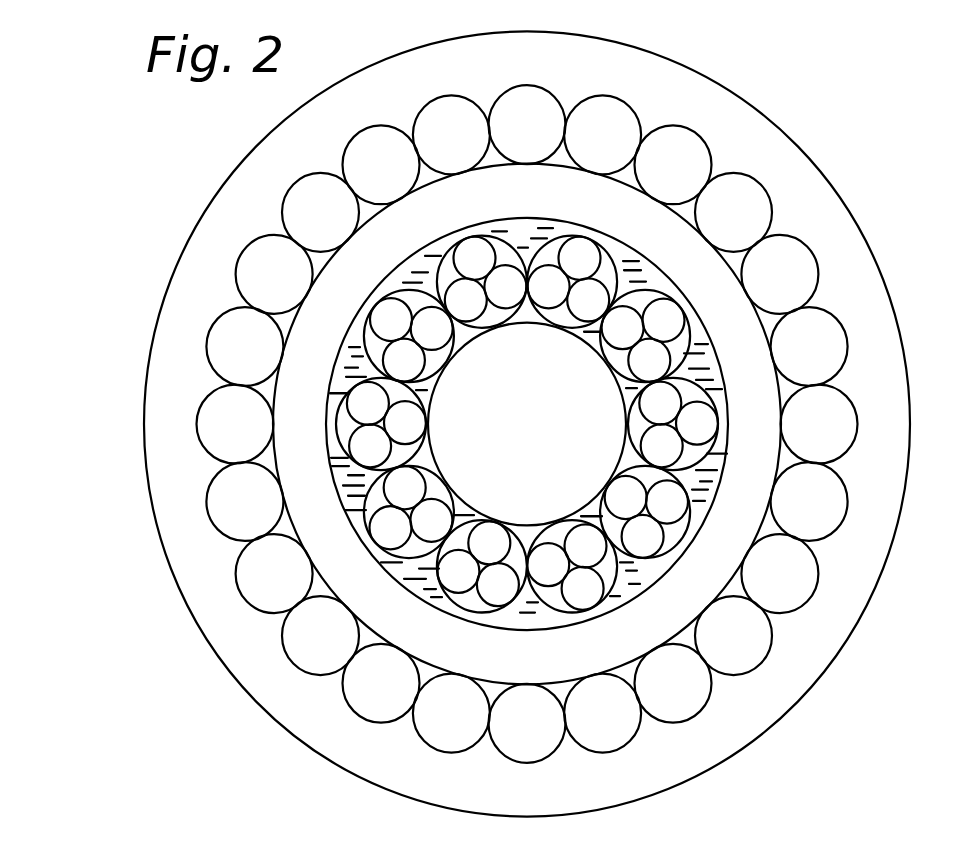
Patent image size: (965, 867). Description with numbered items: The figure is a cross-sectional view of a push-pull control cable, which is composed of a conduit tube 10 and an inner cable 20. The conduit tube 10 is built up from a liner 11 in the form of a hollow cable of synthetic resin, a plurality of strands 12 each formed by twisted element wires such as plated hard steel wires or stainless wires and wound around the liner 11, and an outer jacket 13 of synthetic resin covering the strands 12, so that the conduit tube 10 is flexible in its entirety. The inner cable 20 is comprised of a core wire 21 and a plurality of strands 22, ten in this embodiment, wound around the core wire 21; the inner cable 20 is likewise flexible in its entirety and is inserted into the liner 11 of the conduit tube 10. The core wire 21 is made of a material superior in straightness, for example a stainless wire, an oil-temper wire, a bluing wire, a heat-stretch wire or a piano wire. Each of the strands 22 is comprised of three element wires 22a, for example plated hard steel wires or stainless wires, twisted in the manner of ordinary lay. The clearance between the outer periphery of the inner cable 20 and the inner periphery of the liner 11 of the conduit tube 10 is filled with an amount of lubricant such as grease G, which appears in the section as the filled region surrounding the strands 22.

The conduit tube 10 is at (803, 148).
The liner 11 is at (562, 163).
The strands 12 is at (818, 260).
The outer sheath 13 is at (720, 83).
The inner cable 20 is at (703, 472).
The core wire 21 is at (548, 438).
The strands 22 is at (518, 313).
The element wires 22a is at (520, 306).
The grease G is at (653, 560).